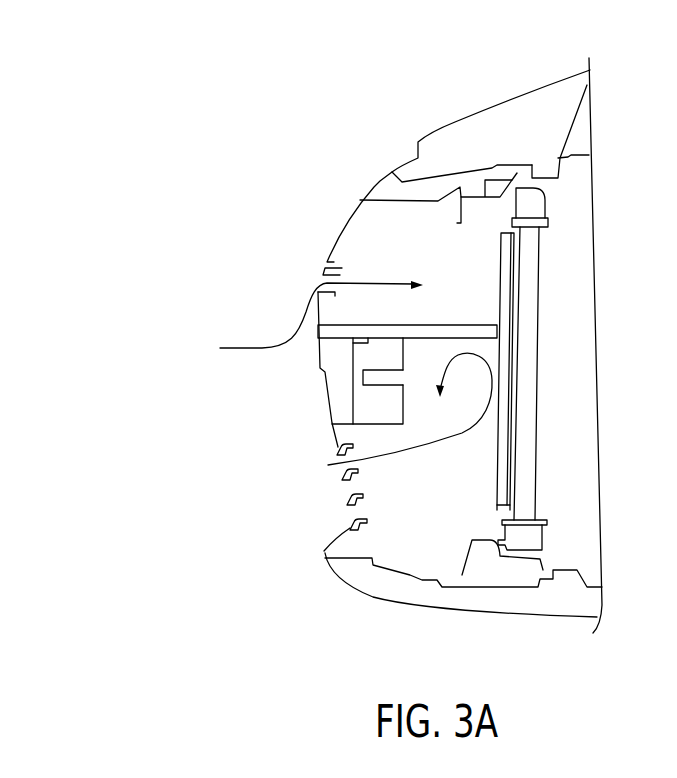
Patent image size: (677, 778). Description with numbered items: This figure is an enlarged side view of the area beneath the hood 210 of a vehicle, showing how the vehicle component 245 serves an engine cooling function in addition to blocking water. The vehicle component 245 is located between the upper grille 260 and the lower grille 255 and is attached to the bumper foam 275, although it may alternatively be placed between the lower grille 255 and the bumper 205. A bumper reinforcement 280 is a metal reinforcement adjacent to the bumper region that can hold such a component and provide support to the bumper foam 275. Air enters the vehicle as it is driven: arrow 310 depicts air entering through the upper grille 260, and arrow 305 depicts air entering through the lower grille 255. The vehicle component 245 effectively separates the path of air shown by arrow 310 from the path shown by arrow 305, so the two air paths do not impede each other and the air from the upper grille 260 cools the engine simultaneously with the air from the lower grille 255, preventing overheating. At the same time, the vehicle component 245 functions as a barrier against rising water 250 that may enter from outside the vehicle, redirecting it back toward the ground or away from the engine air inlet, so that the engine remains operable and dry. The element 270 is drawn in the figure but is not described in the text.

The hood 210 is at (481, 108).
The upper grille 260 is at (308, 254).
The arrow 310 is at (232, 348).
The vehicle component 245 is at (442, 325).
The bumper foam 275 is at (332, 356).
The bumper 205 is at (327, 407).
The bumper reinforcement 280 is at (382, 400).
The lower grille 255 is at (323, 518).
The arrow 305 is at (417, 456).
The lamp assembly 270 is at (540, 432).
The water 250 is at (487, 627).